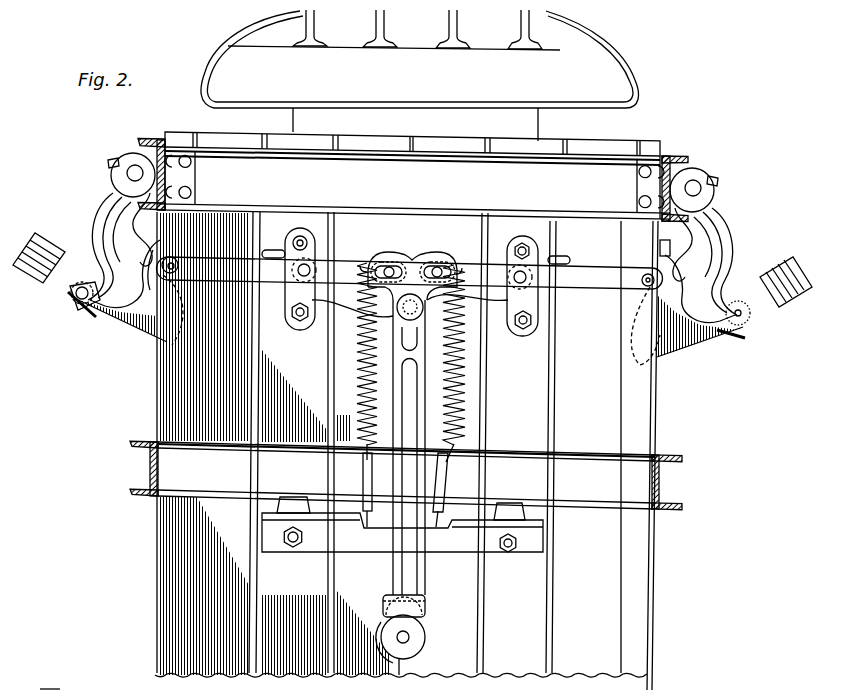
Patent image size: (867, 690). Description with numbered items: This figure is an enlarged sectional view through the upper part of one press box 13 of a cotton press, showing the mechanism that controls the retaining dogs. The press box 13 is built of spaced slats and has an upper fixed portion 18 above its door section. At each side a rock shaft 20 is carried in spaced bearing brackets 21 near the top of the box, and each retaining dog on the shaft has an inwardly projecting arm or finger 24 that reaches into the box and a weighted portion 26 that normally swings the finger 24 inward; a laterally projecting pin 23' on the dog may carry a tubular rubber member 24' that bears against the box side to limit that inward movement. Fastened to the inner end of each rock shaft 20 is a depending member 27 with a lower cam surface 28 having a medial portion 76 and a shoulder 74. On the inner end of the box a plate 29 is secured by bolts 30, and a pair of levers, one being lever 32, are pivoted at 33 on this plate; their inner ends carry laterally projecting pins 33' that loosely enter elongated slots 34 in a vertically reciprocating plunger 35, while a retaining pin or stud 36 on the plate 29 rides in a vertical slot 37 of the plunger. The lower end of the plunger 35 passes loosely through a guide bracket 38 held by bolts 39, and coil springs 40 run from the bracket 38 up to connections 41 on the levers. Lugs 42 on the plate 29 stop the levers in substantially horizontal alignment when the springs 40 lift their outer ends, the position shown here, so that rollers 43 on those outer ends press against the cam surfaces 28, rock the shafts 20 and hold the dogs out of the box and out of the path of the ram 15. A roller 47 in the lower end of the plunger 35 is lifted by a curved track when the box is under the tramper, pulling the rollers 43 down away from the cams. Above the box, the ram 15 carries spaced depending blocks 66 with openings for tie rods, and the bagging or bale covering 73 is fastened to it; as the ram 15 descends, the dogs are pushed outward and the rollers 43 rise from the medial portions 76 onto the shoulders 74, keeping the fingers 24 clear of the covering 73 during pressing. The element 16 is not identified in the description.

The press box 13 is at (160, 566).
The ram 15 is at (470, 48).
The base 16 is at (51, 685).
The upper fixed portion 18 is at (652, 440).
The rock shaft 20 is at (705, 190).
The bearing bracket 21 is at (118, 202).
The laterally projecting pin 23' is at (404, 317).
The arm or finger 24 is at (119, 333).
The tubular rubber member 24' is at (411, 315).
The weighted portion 26 is at (36, 246).
The depending member 27 is at (97, 305).
The cam surface 28 is at (118, 313).
The plate 29 is at (428, 257).
The bolt 30 is at (300, 316).
The lever 32 is at (615, 287).
The pivot 33 is at (337, 247).
The laterally projecting pin 33' is at (407, 235).
The elongated slot 34 is at (440, 270).
The plunger 35 is at (420, 588).
The retaining pin or stud 36 is at (468, 290).
The vertical slot 37 is at (180, 293).
The guide bracket 38 is at (363, 552).
The bolt 39 is at (510, 552).
The coil spring 40 is at (352, 390).
The spring connection 41 is at (364, 268).
The lug 42 is at (565, 262).
The roller 43 is at (175, 308).
The roller 47 is at (418, 635).
The depending block 66 is at (600, 80).
The bagging or bale covering 73 is at (638, 97).
The shoulder 74 is at (172, 250).
The medial portion 76 is at (655, 347).